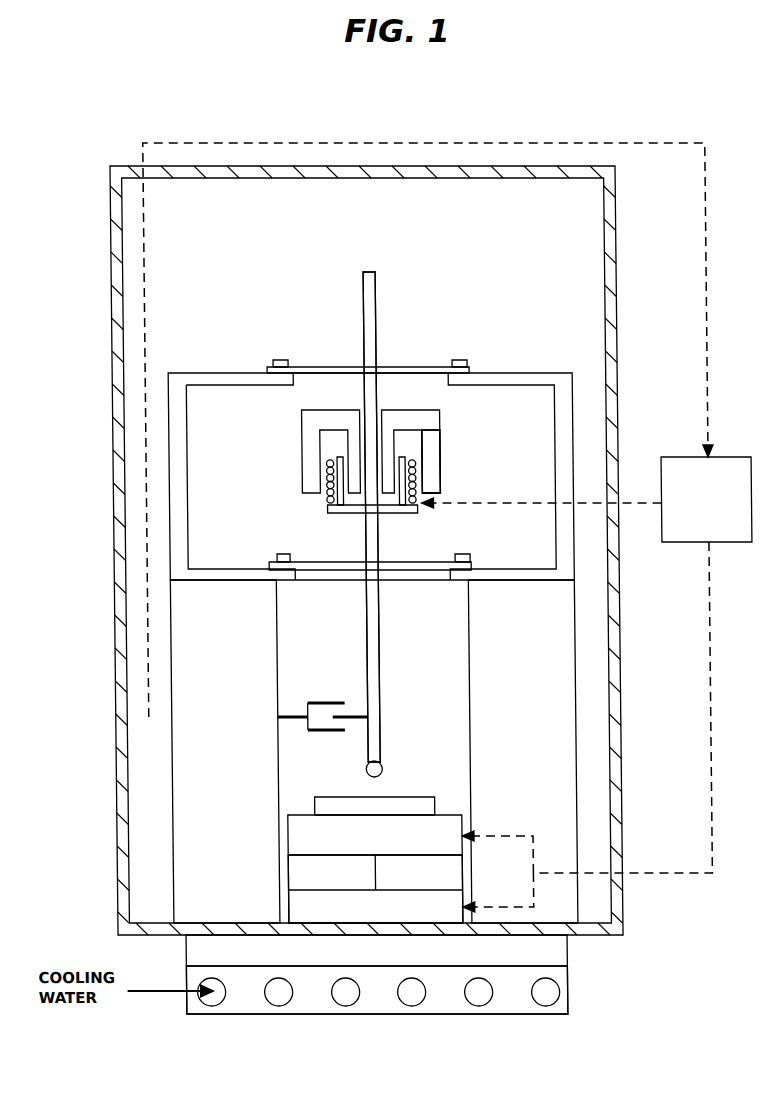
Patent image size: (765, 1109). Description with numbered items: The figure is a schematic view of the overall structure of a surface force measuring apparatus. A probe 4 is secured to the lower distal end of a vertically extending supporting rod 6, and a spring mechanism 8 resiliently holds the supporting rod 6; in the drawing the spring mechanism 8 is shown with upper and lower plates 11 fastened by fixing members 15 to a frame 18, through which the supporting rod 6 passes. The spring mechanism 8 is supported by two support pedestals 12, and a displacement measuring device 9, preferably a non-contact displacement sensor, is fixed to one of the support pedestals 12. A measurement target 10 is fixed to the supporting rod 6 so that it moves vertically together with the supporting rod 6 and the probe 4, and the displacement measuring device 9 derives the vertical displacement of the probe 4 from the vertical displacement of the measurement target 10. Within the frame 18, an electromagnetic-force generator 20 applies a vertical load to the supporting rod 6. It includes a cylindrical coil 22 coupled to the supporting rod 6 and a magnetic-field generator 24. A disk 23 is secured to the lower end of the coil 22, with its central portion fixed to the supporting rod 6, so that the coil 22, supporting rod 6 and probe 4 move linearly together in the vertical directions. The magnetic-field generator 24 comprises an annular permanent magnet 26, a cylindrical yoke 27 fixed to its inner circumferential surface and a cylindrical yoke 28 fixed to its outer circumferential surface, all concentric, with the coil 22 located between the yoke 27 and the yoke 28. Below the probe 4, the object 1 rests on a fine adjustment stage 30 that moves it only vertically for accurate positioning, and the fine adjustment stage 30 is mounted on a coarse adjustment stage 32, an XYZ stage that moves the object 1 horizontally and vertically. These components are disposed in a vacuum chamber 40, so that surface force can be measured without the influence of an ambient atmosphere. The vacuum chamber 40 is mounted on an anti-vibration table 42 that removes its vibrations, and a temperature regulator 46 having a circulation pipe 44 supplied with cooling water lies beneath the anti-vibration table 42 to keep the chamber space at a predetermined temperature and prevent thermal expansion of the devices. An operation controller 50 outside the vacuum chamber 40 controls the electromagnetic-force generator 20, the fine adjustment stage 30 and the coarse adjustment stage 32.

The object 1 is at (391, 797).
The probe 4 is at (377, 765).
The supporting rod 6 is at (375, 660).
The spring mechanism 8 is at (345, 345).
The displacement measuring device 9 is at (315, 703).
The measurement target 10 is at (355, 712).
The support plates 11 is at (326, 367).
The support pedestal 12 is at (166, 788).
The fixing members 15 is at (280, 359).
The frame 18 is at (173, 372).
The electromagnetic-force generator 20 is at (366, 463).
The coil 22 is at (324, 505).
The disk 23 is at (405, 513).
The magnetic-field generator 24 is at (450, 472).
The permanent magnet 26 is at (386, 410).
The yoke 27 is at (356, 410).
The yoke 28 is at (437, 441).
The fine adjustment stage 30 is at (450, 815).
The coarse adjustment stage 32 is at (281, 881).
The vacuum chamber 40 is at (615, 265).
The anti-vibration table 42 is at (559, 950).
The circulation pipe 44 is at (403, 1006).
The temperature regulator 46 is at (559, 990).
The operation controller 50 is at (679, 457).